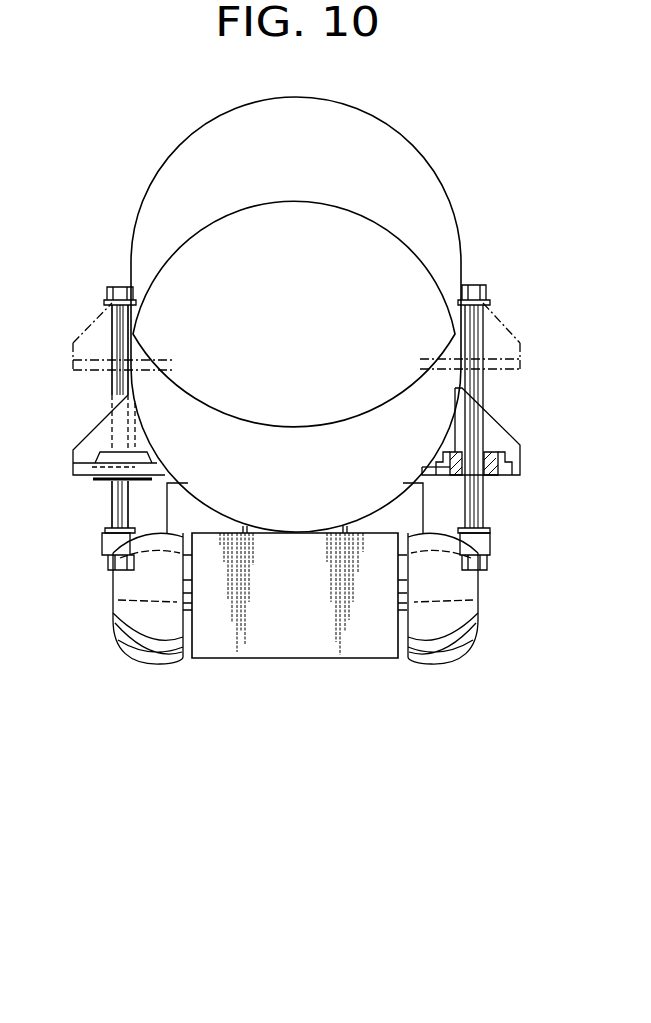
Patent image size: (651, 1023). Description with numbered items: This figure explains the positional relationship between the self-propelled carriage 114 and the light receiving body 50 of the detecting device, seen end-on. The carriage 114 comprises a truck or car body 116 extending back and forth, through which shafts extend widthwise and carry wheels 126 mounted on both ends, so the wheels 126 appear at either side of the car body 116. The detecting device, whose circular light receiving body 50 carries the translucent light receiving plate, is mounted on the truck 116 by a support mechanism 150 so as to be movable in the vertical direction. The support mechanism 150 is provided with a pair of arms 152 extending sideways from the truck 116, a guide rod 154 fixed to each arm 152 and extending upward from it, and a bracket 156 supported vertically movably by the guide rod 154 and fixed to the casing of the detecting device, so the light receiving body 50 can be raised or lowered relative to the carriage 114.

The light receiving body 50 is at (438, 178).
The self-propelled carriage 114 is at (240, 648).
The car body 116 is at (324, 645).
The wheels 126 is at (450, 642).
The support mechanism 150 is at (100, 417).
The arms 152 is at (103, 541).
The guide rod 154 is at (118, 330).
The bracket 156 is at (84, 450).